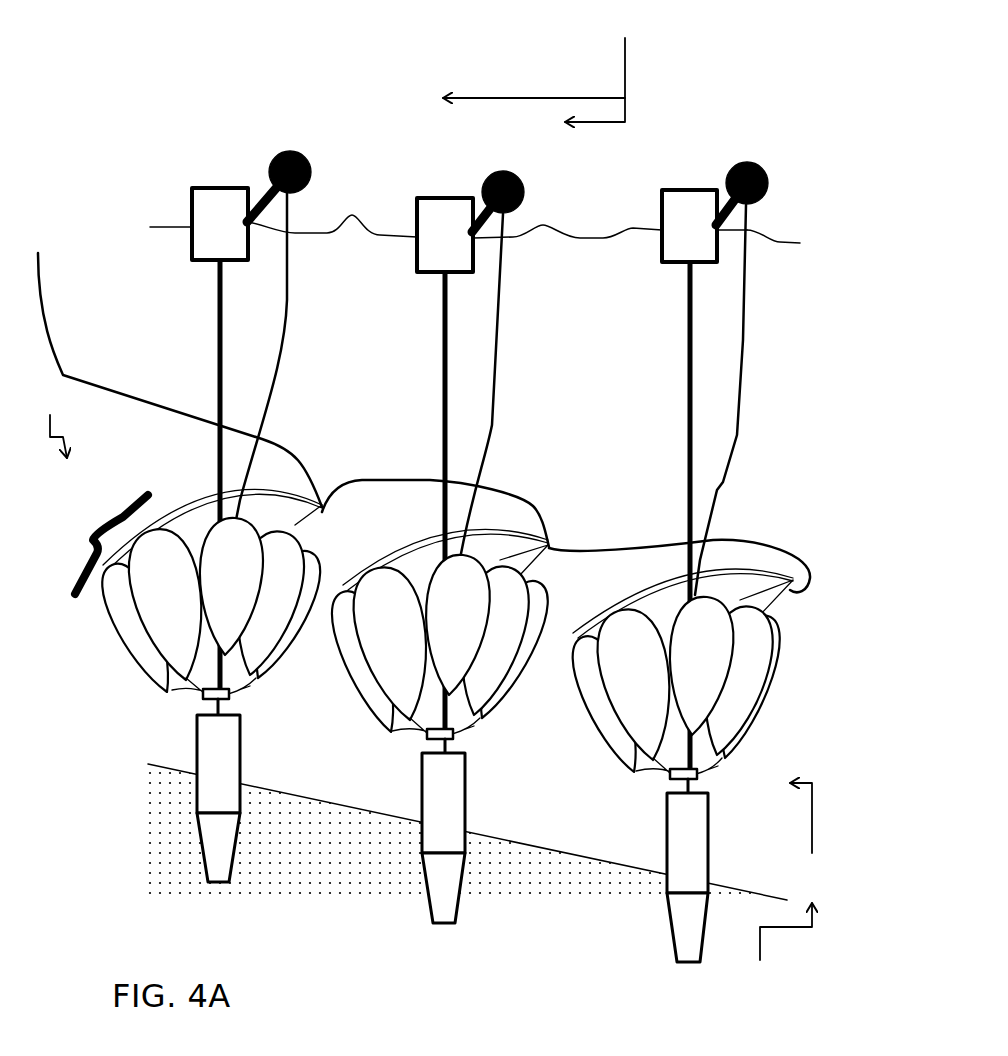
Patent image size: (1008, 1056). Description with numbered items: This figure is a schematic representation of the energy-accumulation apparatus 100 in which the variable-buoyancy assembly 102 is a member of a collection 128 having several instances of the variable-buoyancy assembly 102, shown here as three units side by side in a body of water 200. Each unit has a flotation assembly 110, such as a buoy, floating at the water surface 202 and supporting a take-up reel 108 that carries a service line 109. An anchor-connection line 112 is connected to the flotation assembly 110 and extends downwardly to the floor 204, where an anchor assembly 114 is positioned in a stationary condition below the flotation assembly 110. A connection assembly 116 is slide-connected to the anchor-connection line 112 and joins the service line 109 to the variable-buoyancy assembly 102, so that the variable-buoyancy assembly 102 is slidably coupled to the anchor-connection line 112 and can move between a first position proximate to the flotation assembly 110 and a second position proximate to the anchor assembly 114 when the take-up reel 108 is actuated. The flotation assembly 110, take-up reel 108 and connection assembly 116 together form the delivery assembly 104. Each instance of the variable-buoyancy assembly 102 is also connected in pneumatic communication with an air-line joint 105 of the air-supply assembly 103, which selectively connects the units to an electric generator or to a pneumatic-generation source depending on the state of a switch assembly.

The energy-accumulation apparatus 100 is at (419, 695).
The variable-buoyancy assembly 102 is at (135, 623).
The air-supply assembly 103 is at (87, 380).
The delivery assembly 104 is at (639, 452).
The air-line joint 105 is at (324, 508).
The take-up reel 108 is at (292, 150).
The service line 109 is at (284, 343).
The flotation assembly 110 is at (220, 187).
The anchor-connection line 112 is at (217, 297).
The anchor assembly 114 is at (242, 765).
The connection assembly 116 is at (231, 700).
The collection 128 is at (80, 521).
The body of water 200 is at (777, 254).
The water surface 202 is at (173, 227).
The floor 204 is at (528, 846).